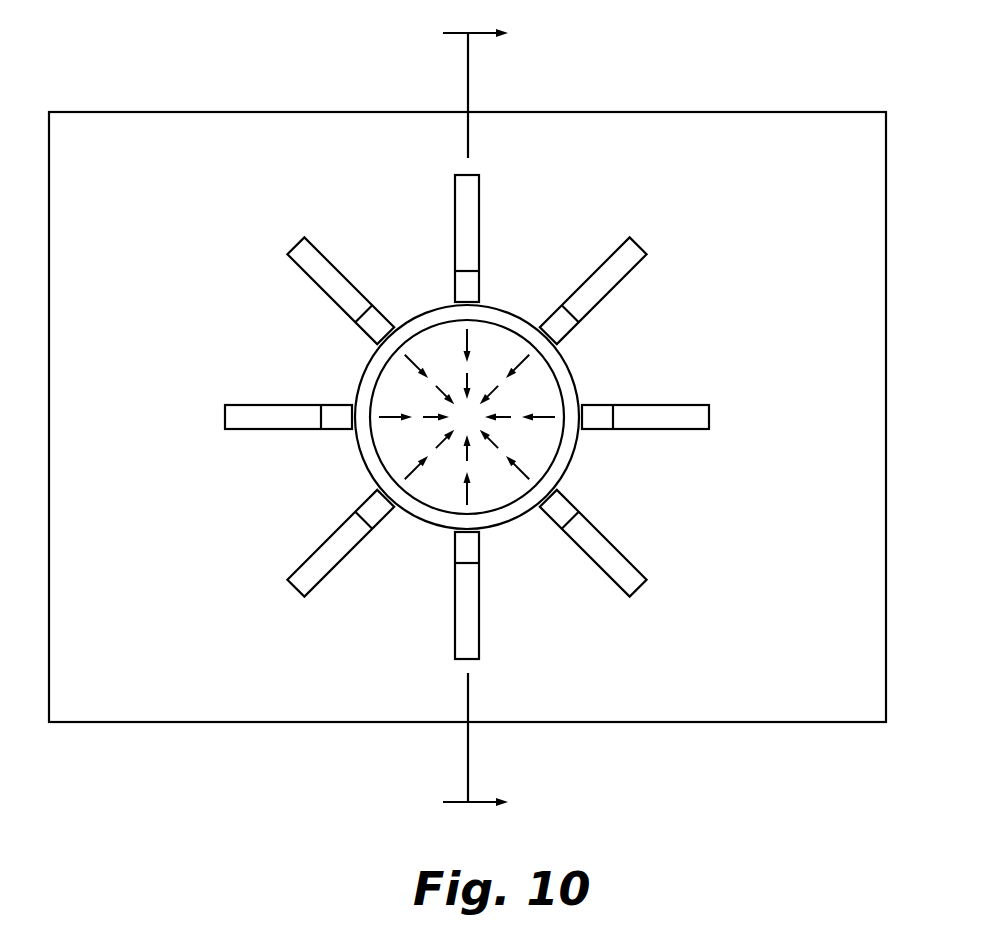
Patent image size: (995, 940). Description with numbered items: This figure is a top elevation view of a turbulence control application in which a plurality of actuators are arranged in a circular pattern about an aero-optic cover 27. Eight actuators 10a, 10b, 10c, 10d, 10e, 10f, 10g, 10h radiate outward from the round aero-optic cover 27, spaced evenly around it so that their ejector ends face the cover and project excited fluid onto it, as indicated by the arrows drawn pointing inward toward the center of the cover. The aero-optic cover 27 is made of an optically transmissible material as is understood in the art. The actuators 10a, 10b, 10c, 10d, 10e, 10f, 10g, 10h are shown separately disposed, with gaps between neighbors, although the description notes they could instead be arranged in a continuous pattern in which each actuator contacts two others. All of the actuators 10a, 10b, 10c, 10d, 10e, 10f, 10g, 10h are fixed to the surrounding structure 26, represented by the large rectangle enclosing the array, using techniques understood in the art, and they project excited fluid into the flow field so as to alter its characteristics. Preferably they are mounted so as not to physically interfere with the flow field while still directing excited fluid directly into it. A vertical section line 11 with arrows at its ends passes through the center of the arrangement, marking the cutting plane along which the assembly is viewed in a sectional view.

The actuator 10a is at (481, 199).
The actuator 10b is at (629, 273).
The actuator 10c is at (643, 430).
The actuator 10d is at (628, 558).
The actuator 10e is at (481, 635).
The actuator 10f is at (307, 560).
The actuator 10g is at (292, 430).
The actuator 10h is at (303, 278).
The section line 11 is at (449, 419).
The structure 26 is at (723, 112).
The aero-optic cover 27 is at (427, 521).